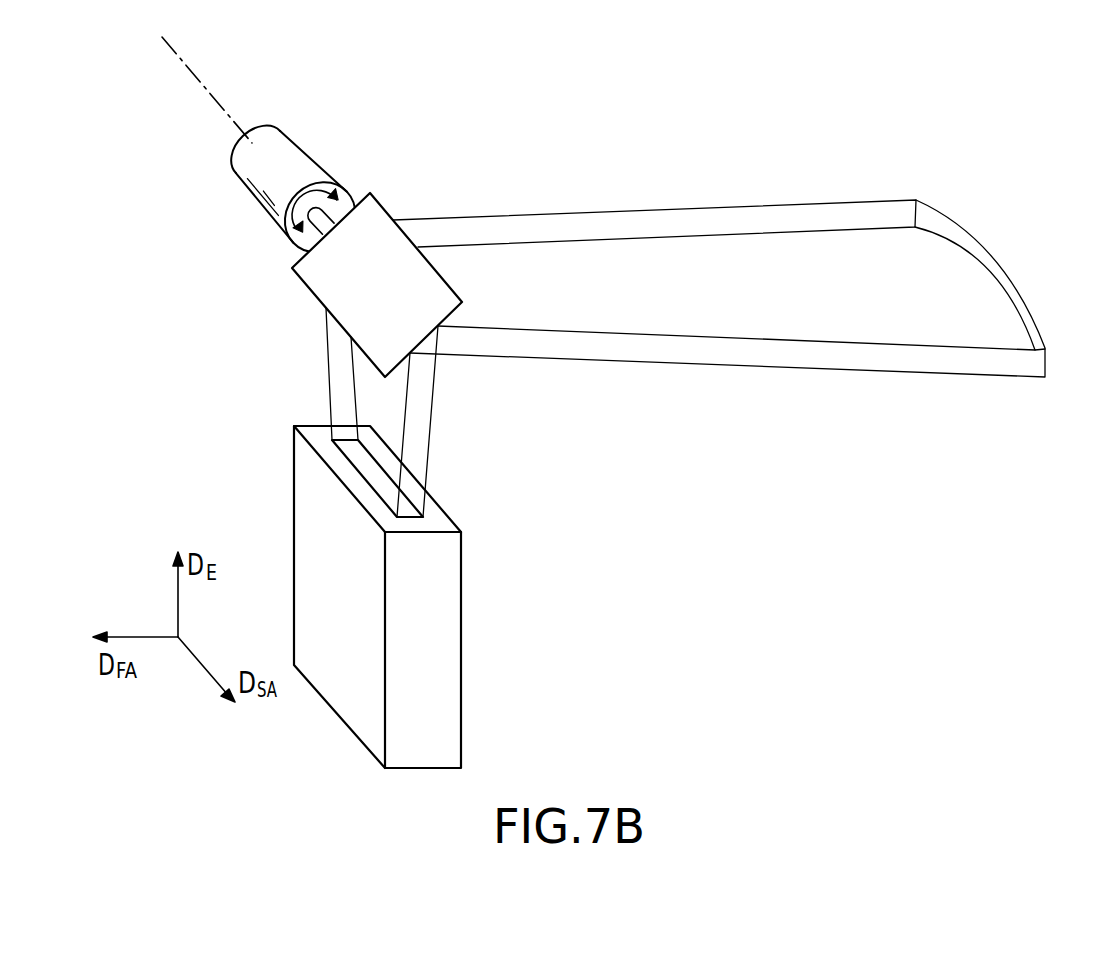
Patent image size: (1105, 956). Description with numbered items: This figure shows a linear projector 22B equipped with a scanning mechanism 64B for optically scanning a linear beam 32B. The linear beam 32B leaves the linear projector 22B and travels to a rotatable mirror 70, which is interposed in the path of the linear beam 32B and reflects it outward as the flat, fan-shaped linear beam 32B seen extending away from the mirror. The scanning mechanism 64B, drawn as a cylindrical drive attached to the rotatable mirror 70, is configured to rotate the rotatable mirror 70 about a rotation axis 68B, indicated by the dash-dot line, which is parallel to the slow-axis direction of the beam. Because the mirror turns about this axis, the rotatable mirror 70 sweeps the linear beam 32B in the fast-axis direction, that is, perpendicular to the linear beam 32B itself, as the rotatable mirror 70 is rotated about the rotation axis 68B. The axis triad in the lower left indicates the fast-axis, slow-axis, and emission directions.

The rotation axis 68B is at (209, 91).
The scanning mechanism 64B is at (258, 220).
The rotatable mirror 70 is at (337, 282).
The linear beam 32B is at (653, 269).
The linear projector 22B is at (445, 668).